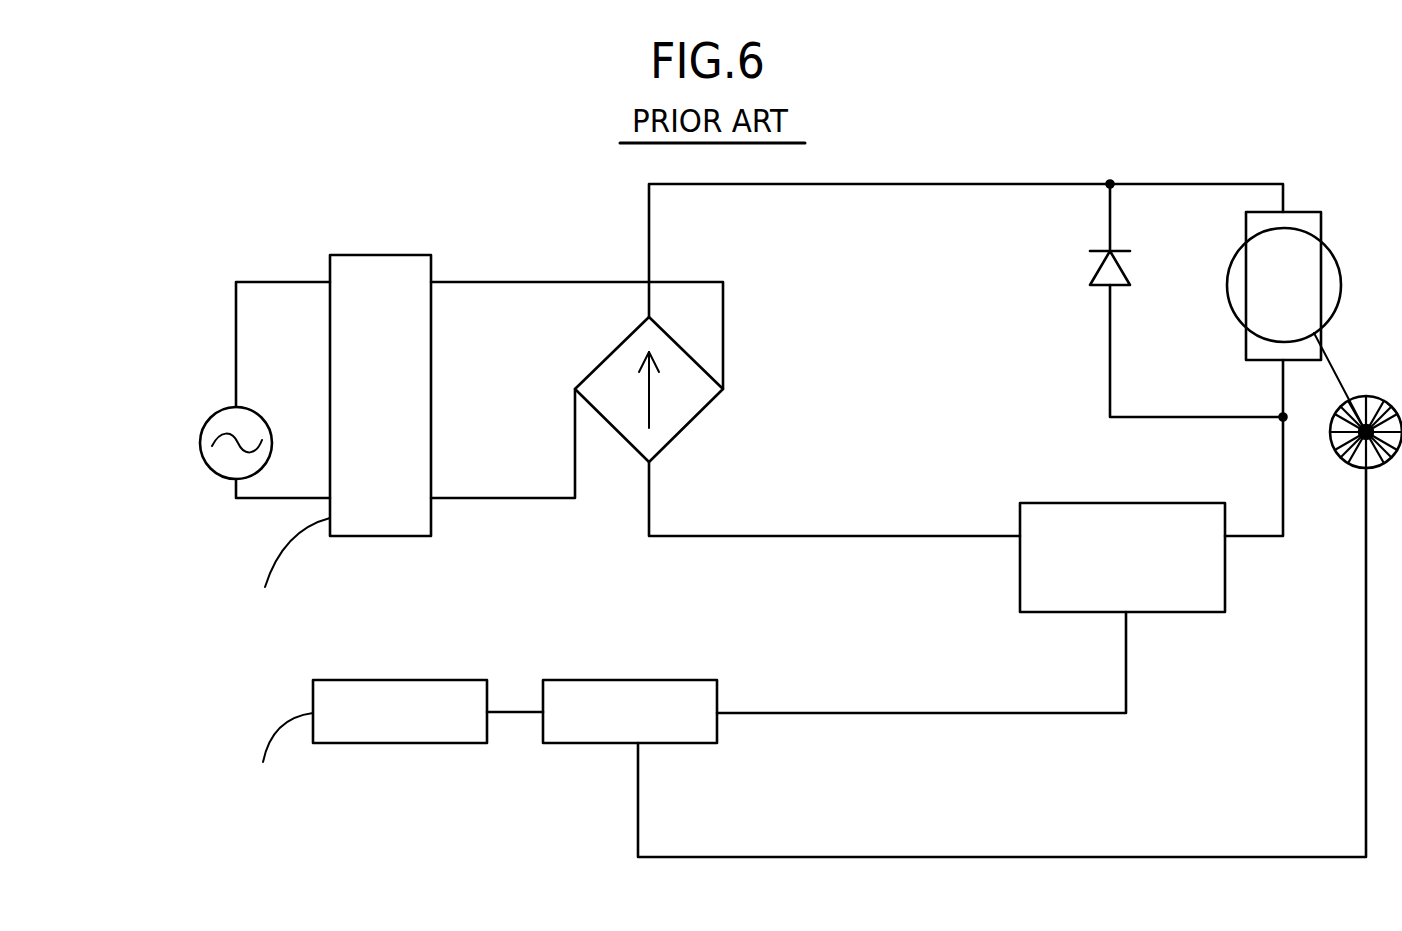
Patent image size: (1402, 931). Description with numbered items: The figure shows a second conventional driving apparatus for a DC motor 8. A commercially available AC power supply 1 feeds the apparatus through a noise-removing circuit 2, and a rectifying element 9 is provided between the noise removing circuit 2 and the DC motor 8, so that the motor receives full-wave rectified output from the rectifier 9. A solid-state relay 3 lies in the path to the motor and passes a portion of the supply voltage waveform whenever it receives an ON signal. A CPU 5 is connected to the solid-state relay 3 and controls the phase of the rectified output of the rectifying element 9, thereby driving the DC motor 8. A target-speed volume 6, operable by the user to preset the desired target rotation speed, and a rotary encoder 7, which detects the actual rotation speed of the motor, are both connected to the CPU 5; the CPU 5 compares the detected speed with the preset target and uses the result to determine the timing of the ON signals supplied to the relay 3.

The AC power supply 1 is at (200, 435).
The noise-removing circuit 2 is at (403, 510).
The solid-state relay 3 is at (1177, 602).
The CPU 5 is at (672, 730).
The target-speed volume 6 is at (463, 730).
The rotary encoder 7 is at (1347, 453).
The DC motor 8 is at (1240, 283).
The rectifying element 9 is at (670, 422).